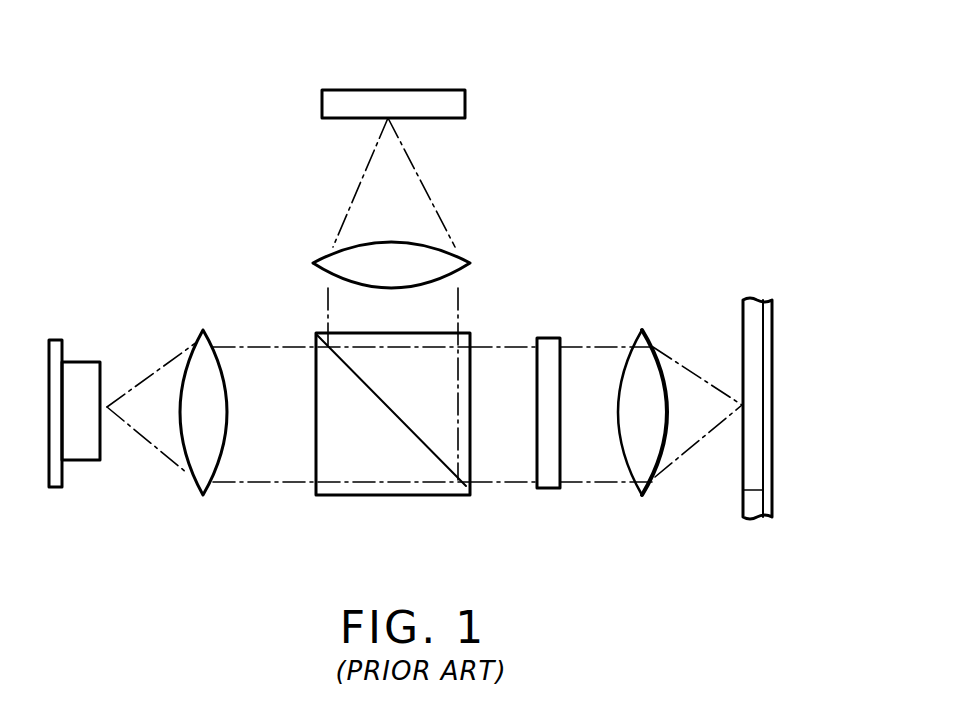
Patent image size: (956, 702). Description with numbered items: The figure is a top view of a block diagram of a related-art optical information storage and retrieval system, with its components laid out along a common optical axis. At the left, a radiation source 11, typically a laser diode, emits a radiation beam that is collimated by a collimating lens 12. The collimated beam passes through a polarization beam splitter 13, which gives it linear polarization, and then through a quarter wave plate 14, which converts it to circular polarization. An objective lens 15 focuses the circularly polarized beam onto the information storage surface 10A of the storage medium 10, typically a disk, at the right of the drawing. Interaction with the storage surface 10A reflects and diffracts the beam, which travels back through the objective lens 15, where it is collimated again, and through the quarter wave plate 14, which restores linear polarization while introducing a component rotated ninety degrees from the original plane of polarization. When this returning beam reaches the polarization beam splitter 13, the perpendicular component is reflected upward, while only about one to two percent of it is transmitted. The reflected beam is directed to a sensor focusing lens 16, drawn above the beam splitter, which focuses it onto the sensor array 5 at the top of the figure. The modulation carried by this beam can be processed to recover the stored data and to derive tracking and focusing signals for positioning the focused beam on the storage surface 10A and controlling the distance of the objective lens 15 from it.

The sensor array 5 is at (465, 105).
The sensor focusing lens 16 is at (460, 253).
The polarization beam splitter 13 is at (377, 496).
The radiation source 11 is at (83, 360).
The collimating lens 12 is at (197, 340).
The quarter wave plate 14 is at (547, 488).
The objective lens 15 is at (650, 340).
The storage medium 10 is at (772, 330).
The information storage surface 10A is at (762, 489).